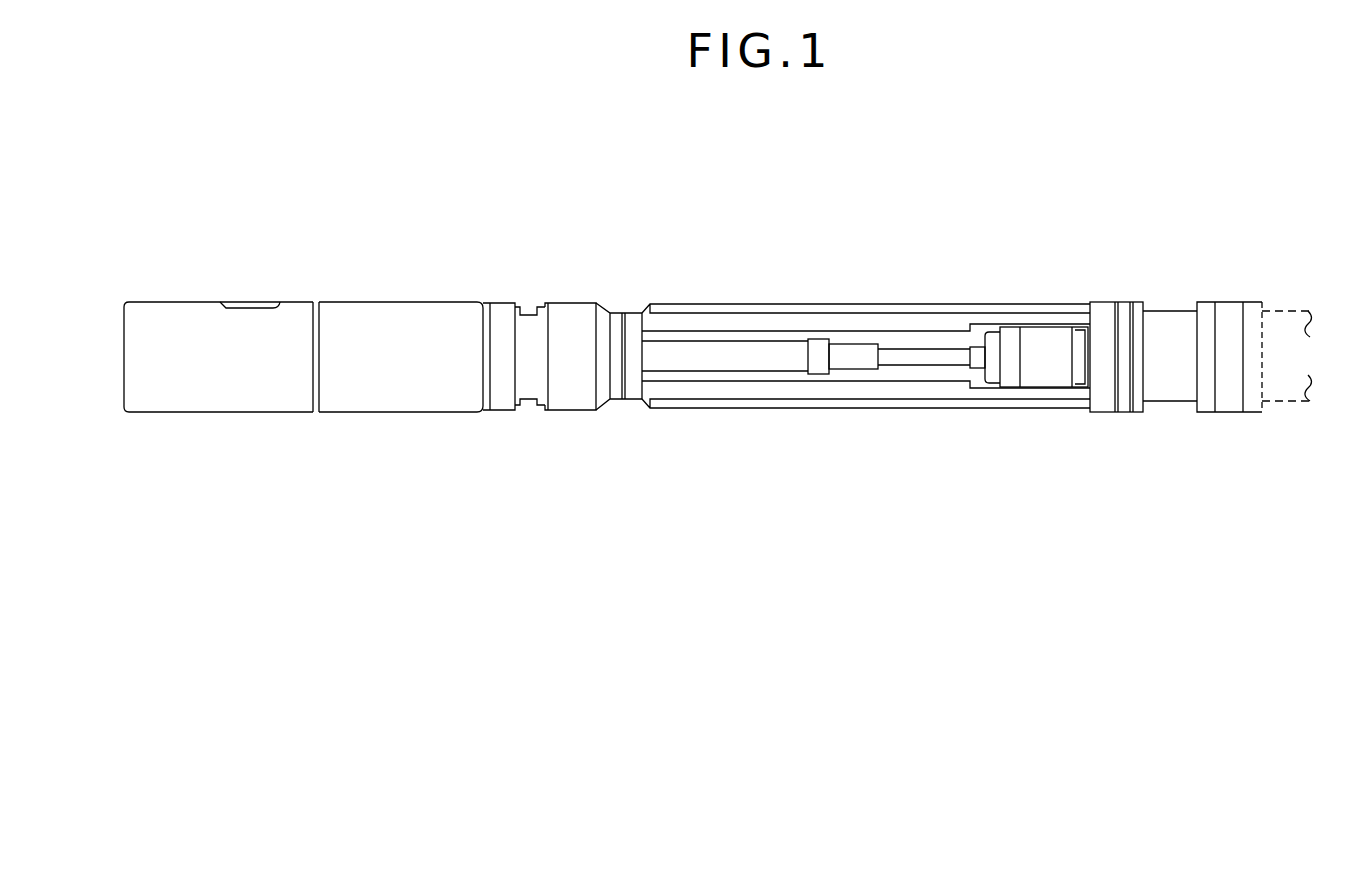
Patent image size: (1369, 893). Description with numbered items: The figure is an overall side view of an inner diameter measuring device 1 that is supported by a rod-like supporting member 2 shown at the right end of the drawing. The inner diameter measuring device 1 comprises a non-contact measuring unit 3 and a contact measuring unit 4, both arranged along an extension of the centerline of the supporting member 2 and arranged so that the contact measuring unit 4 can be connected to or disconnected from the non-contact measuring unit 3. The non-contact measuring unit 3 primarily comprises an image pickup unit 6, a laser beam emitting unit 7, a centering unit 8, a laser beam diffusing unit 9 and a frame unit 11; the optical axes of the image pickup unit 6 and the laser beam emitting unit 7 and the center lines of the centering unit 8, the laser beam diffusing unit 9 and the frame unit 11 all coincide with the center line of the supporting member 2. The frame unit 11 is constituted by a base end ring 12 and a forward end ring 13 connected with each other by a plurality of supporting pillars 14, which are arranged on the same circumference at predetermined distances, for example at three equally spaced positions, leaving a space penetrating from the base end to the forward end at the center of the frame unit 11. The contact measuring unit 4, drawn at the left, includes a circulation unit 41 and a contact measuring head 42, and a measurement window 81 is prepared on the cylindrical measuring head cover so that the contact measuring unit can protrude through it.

The inner diameter measuring device 1 is at (742, 143).
The rod-like supporting member 2 is at (1275, 308).
The non-contact measuring unit 3 is at (943, 270).
The contact measuring unit 4 is at (373, 277).
The image pickup unit 6 is at (1042, 327).
The laser beam emitting unit 7 is at (718, 340).
The centering unit 8 is at (571, 303).
The laser beam diffusing unit 9 is at (525, 305).
The frame unit 11 is at (833, 303).
The base end ring 12 is at (1103, 412).
The forward end ring 13 is at (624, 413).
The supporting pillars 14 is at (875, 408).
The circulation unit 41 is at (407, 414).
The contact measuring head 42 is at (254, 414).
The measurement window 81 is at (250, 303).